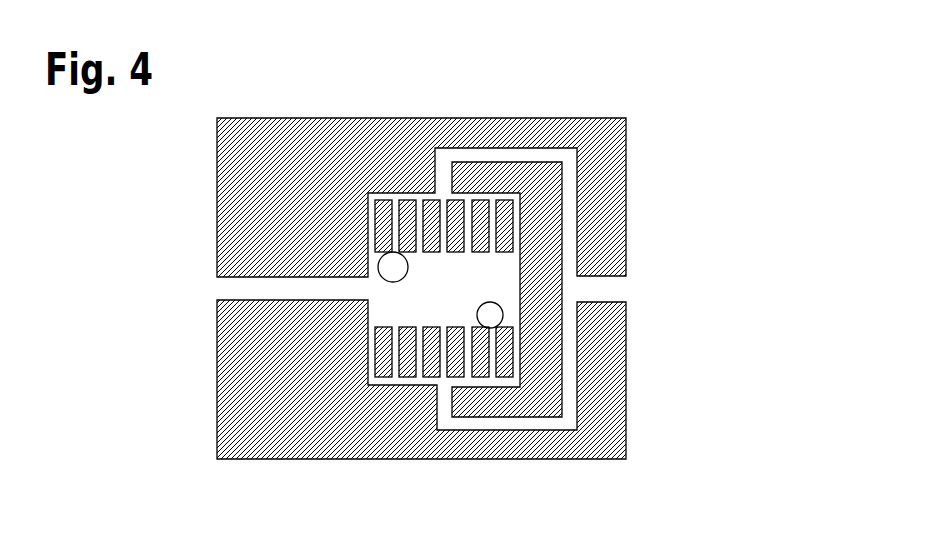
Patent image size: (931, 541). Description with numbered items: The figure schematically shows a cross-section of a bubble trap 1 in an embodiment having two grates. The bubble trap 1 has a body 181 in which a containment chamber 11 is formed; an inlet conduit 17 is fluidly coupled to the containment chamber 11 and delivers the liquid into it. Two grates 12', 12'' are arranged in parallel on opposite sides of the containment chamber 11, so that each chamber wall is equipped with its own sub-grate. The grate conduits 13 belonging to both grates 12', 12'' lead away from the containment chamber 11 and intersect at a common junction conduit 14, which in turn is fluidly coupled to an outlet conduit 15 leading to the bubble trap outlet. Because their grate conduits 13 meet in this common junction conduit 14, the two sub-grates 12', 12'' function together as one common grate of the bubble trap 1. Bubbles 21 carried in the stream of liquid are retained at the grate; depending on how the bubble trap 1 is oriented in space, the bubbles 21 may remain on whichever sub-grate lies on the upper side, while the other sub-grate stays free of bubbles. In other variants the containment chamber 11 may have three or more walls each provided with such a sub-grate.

The bubble trap 1 is at (447, 277).
The containment chamber 11 is at (452, 298).
The grate 12' is at (549, 229).
The grate 12'' is at (421, 420).
The grate conduits 13 is at (443, 200).
The junction conduit 14 is at (408, 197).
The outlet conduit 15 is at (671, 237).
The inlet conduit 17 is at (177, 243).
The body 181 is at (312, 199).
The bubbles 21 is at (440, 290).